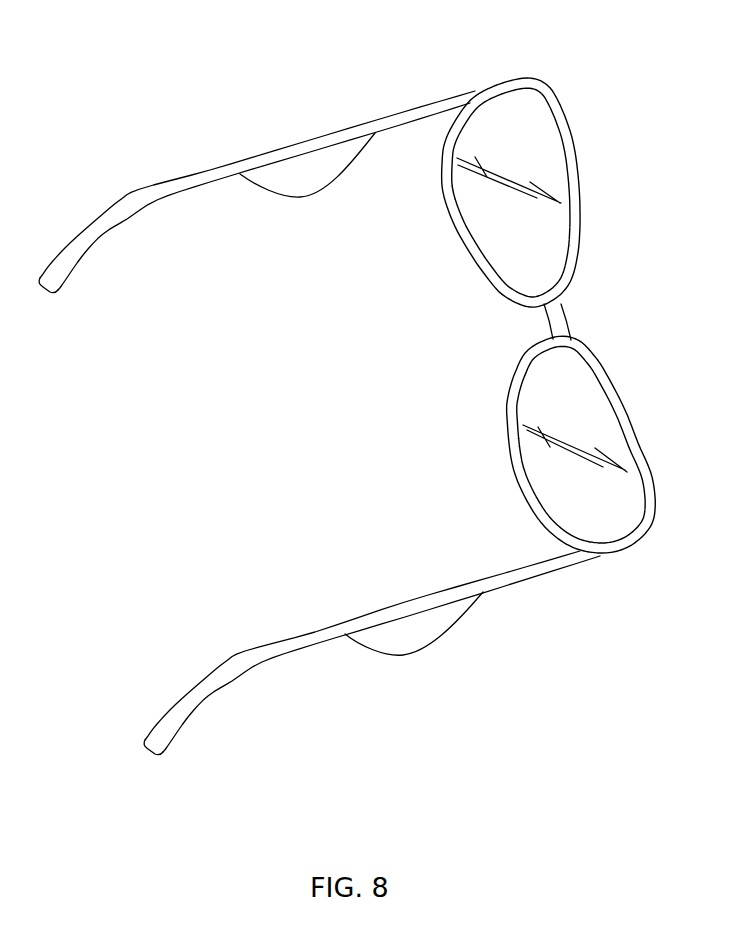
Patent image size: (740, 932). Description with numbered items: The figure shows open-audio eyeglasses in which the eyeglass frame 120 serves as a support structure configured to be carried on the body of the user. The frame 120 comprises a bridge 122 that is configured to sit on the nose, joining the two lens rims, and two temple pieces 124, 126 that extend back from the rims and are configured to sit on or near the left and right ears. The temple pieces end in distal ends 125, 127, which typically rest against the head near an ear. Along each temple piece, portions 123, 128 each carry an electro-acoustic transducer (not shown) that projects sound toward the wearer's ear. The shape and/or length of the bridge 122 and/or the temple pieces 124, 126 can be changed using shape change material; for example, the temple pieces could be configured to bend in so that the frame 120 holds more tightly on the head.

The eyeglass frame 120 is at (344, 404).
The bridge 122 is at (586, 301).
The portion 123 is at (292, 180).
The temple piece 124 is at (142, 201).
The distal end 125 is at (75, 255).
The temple piece 126 is at (240, 663).
The distal end 127 is at (177, 717).
The portion 128 is at (390, 643).